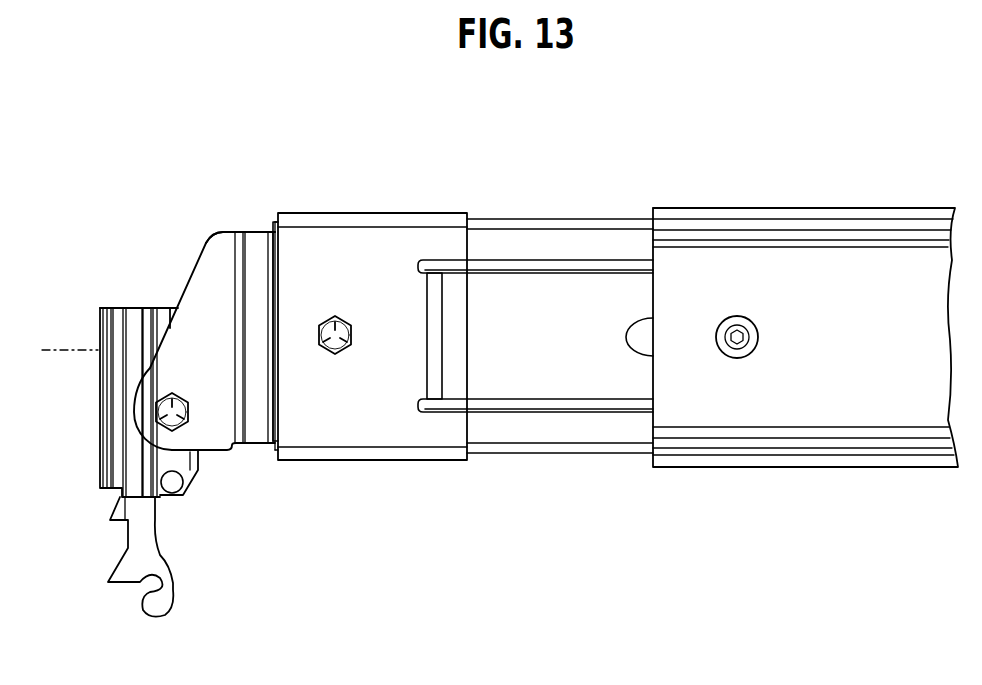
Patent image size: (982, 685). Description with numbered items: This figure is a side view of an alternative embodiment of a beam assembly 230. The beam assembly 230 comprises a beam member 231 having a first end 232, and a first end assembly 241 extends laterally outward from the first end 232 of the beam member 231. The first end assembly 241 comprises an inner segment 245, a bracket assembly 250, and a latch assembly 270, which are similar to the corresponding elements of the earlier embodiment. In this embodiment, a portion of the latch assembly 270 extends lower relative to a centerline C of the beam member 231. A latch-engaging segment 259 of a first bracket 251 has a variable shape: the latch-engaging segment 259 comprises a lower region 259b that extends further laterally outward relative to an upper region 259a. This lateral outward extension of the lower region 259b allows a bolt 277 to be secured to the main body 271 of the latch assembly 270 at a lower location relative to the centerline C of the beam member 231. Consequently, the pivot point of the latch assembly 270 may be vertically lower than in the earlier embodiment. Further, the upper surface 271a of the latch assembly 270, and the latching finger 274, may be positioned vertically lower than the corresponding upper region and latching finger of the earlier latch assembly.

The beam assembly 230 is at (714, 161).
The beam member 231 is at (824, 255).
The first end 232 is at (666, 206).
The first end assembly 241 is at (468, 200).
The inner segment 245 is at (530, 396).
The bracket assembly 250 is at (370, 380).
The first bracket 251 is at (360, 468).
The latch-engaging segment 259 is at (193, 270).
The upper region 259a is at (225, 230).
The lower region 259b is at (212, 455).
The latch assembly 270 is at (111, 439).
The main body 271 is at (99, 453).
The upper surface 271a is at (122, 307).
The latching finger 274 is at (135, 584).
The bolt 277 is at (155, 404).
The centerline C is at (64, 350).